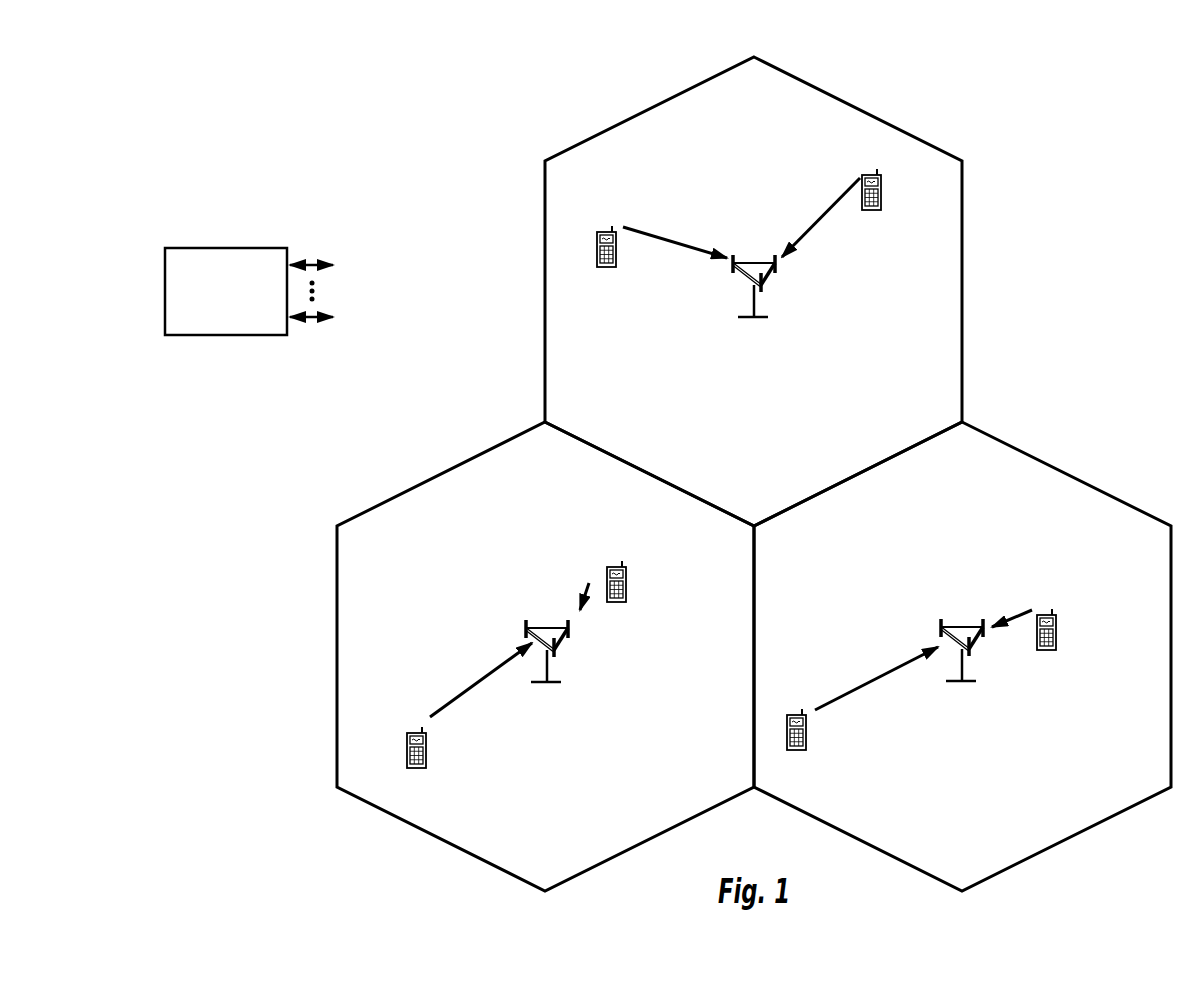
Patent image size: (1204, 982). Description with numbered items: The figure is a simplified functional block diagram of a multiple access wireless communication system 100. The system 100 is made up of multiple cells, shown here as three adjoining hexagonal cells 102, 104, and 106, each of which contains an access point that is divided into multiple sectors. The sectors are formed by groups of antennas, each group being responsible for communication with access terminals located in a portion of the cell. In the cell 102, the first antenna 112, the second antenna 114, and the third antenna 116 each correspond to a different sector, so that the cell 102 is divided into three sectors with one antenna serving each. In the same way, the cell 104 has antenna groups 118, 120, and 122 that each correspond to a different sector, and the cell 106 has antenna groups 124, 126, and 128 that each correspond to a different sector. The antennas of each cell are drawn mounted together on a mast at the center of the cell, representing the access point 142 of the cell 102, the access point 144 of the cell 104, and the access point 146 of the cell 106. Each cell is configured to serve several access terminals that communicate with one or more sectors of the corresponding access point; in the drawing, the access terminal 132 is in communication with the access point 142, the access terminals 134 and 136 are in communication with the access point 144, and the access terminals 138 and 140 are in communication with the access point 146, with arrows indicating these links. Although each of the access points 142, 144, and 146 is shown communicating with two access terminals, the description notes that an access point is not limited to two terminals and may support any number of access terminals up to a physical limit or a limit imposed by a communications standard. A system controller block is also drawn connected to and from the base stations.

The multiple access wireless communication system 100 is at (1126, 85).
The cell 102 is at (985, 466).
The cell 104 is at (737, 561).
The cell 106 is at (592, 416).
The first antenna 112 is at (919, 599).
The second antenna 114 is at (989, 677).
The third antenna 116 is at (1018, 663).
The antenna group 118 is at (584, 673).
The antenna group 120 is at (610, 656).
The antenna group 122 is at (486, 606).
The antenna group 124 is at (693, 296).
The antenna group 126 is at (795, 310).
The antenna group 128 is at (828, 279).
The access terminal 132 is at (862, 698).
The access terminal 134 is at (603, 569).
The access terminal 136 is at (463, 705).
The access terminal 138 is at (657, 230).
The access terminal 140 is at (841, 199).
The access point 142 is at (975, 639).
The access point 144 is at (548, 641).
The access point 146 is at (767, 285).